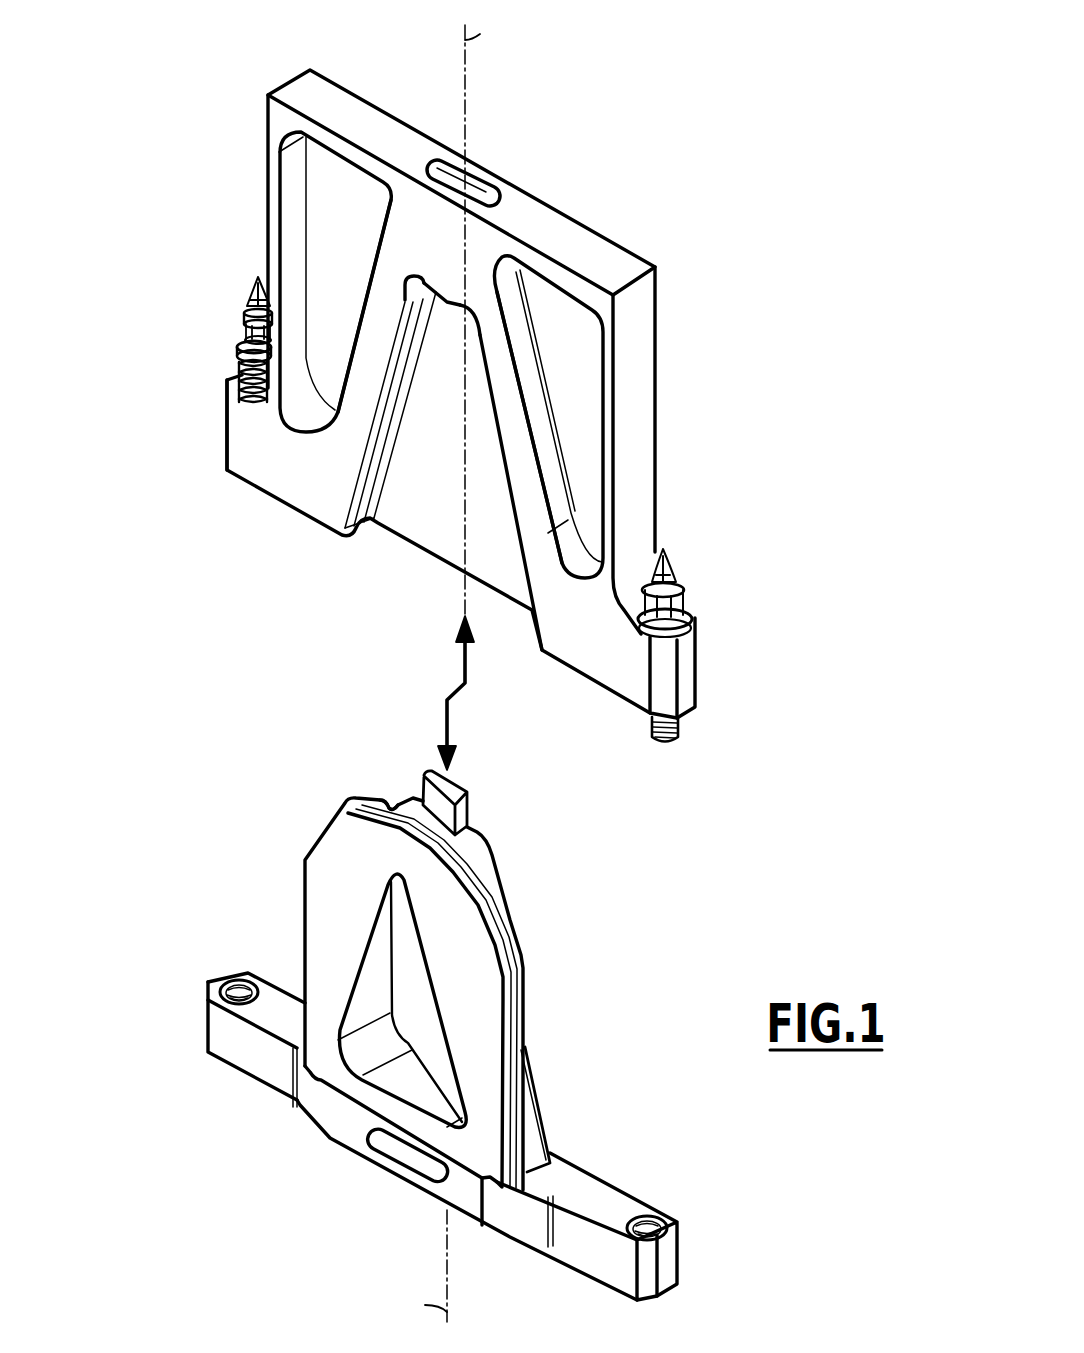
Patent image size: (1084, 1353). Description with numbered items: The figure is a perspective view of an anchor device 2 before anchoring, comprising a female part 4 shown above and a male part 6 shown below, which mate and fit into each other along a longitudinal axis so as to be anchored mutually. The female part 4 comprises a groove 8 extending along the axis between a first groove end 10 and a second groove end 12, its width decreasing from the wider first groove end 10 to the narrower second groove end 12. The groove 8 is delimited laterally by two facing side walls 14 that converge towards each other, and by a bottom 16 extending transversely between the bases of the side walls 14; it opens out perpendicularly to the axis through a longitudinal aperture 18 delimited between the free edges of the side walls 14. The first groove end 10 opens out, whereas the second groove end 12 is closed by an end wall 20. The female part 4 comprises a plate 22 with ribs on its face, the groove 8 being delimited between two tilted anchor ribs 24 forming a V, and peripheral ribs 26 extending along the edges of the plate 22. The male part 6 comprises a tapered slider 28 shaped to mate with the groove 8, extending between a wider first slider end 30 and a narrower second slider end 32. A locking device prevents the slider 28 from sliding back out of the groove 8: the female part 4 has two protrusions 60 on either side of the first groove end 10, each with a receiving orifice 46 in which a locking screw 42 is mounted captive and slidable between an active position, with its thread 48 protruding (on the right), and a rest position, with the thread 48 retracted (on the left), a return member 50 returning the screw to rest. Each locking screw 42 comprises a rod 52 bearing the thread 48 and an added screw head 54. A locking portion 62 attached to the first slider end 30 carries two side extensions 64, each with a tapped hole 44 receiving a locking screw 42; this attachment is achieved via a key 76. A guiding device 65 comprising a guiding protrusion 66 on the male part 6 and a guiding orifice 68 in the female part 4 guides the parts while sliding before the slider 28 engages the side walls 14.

The anchor device 2 is at (678, 130).
The female part 4 is at (735, 398).
The male part 6 is at (612, 1010).
The groove 8 is at (378, 548).
The first groove end 10 is at (443, 573).
The second groove end 12 is at (466, 303).
The side walls 14 is at (397, 388).
The bottom 16 is at (497, 548).
The longitudinal aperture 18 is at (370, 477).
The end wall 20 is at (450, 305).
The plate 22 is at (672, 260).
The anchor ribs 24 is at (377, 358).
The peripheral ribs 26 is at (290, 198).
The slider 28 is at (505, 825).
The first slider end 30 is at (533, 1142).
The second slider end 32 is at (410, 825).
The locking screw 42 is at (705, 592).
The tapped hole 44 is at (238, 983).
The receiving orifice 46 is at (236, 381).
The thread 48 is at (690, 722).
The return member 50 is at (238, 352).
The rod 52 is at (668, 572).
The screw head 54 is at (680, 598).
The protrusions 60 is at (262, 463).
The locking portion 62 is at (205, 1070).
The side extensions 64 is at (267, 1065).
The guiding device 65 is at (560, 98).
The guiding protrusion 66 is at (453, 782).
The guiding orifice 68 is at (490, 190).
The key 76 is at (410, 1150).